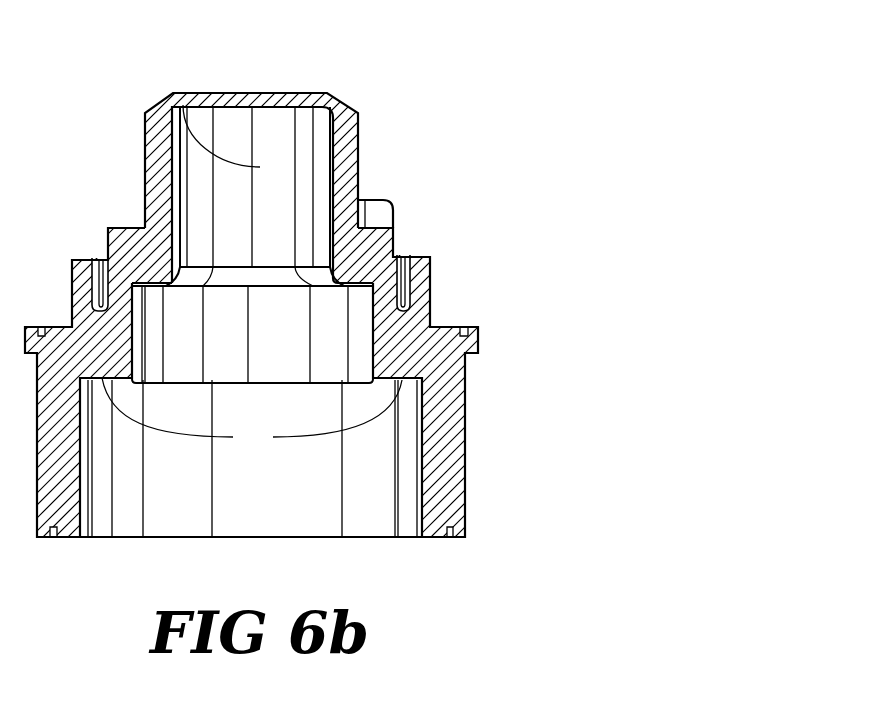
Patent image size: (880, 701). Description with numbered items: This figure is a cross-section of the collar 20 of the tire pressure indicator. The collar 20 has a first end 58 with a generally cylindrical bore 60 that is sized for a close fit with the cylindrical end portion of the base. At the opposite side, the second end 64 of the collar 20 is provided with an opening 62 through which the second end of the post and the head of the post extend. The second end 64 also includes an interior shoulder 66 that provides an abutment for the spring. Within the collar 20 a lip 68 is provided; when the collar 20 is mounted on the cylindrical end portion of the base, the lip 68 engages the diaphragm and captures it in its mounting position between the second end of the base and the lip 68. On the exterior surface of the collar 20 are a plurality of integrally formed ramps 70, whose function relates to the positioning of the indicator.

The collar 20 is at (418, 86).
The first end 58 is at (486, 464).
The cylindrical bore 60 is at (305, 500).
The opening 62 is at (285, 226).
The second end 64 is at (385, 171).
The interior shoulder 66 is at (260, 167).
The lip 68 is at (252, 414).
The ramps 70 is at (373, 214).